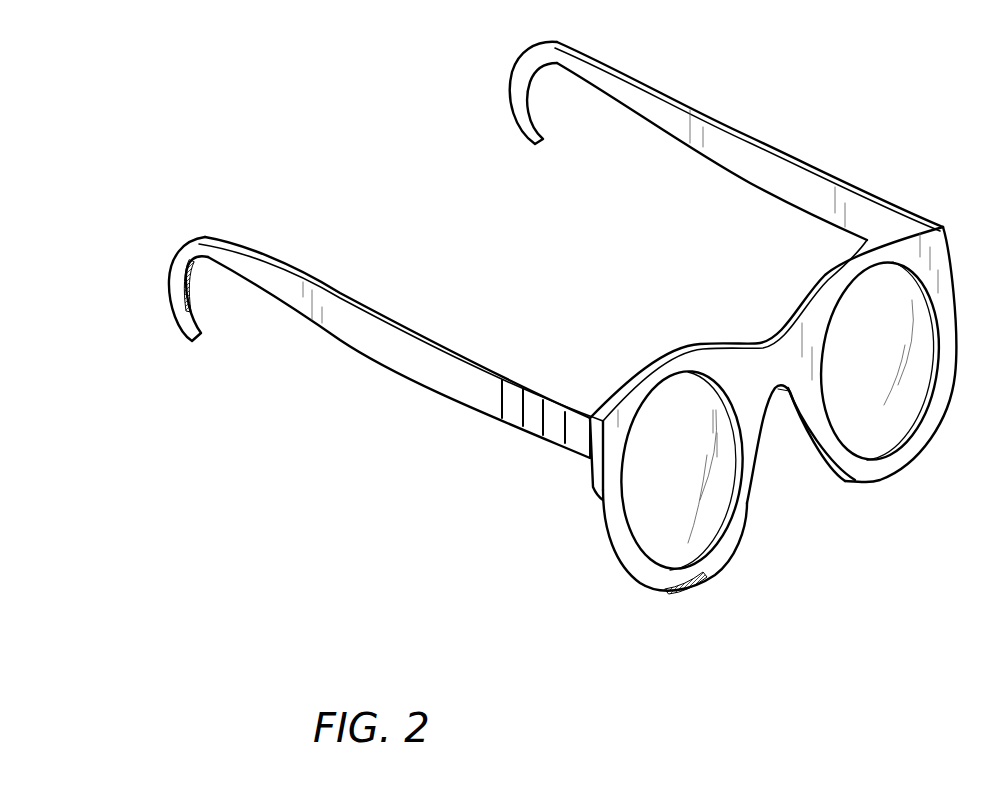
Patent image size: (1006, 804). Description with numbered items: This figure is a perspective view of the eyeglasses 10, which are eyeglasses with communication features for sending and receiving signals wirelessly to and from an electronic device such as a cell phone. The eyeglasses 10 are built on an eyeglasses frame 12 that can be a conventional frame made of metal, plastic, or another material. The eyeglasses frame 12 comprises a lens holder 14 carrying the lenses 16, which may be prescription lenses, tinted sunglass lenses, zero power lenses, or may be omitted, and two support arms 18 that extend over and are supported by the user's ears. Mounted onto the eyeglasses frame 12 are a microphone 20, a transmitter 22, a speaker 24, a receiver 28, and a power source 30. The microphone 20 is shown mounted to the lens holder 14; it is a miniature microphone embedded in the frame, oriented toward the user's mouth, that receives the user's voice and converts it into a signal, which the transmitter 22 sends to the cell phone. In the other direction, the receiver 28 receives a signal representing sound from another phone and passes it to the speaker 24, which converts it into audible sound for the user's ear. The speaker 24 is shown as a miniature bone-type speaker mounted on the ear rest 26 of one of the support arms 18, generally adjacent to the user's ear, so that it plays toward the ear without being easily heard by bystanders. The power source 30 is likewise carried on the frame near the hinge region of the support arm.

The eyeglasses 10 is at (855, 103).
The eyeglasses frame 12 is at (880, 180).
The lens holder 14 is at (897, 477).
The lenses 16 is at (902, 412).
The support arms 18 is at (717, 150).
The microphone 20 is at (687, 592).
The transmitter 22 is at (557, 400).
The speaker 24 is at (197, 296).
The ear rest 26 is at (207, 235).
The receiver 28 is at (537, 390).
The power source 30 is at (520, 380).